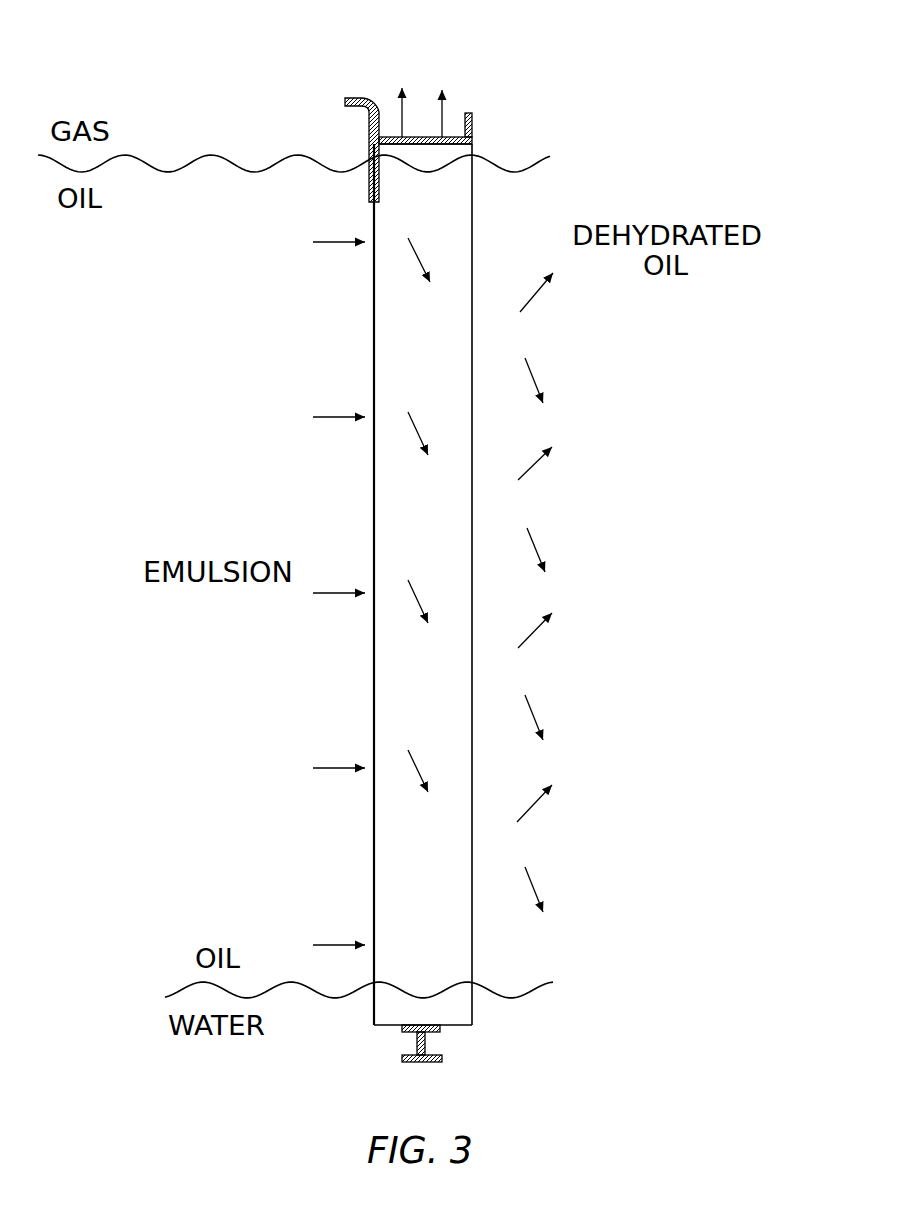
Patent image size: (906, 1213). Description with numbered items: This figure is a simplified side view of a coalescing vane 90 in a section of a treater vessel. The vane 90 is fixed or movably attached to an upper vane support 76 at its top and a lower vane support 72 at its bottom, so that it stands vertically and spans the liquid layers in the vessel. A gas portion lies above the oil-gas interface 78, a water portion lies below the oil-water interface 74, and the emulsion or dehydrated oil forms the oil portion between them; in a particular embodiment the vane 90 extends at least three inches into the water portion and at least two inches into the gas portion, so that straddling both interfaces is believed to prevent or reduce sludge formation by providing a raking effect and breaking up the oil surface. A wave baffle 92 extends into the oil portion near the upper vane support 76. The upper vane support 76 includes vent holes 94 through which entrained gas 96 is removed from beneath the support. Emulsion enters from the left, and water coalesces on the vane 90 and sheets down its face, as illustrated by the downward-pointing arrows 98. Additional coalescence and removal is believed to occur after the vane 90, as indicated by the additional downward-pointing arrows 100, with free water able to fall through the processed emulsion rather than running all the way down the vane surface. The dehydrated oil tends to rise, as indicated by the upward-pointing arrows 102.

The lower vane support 72 is at (427, 1040).
The oil-water interface 74 is at (292, 980).
The upper vane support 76 is at (473, 127).
The oil-gas interface 78 is at (250, 172).
The coalescing vane 90 is at (372, 358).
The wave baffle 92 is at (370, 135).
The vent holes 94 is at (424, 113).
The entrained gas 96 is at (443, 108).
The downward-pointing arrows 98 is at (425, 265).
The additional downward-pointing arrows 100 is at (533, 378).
The upward-pointing arrows 102 is at (533, 467).